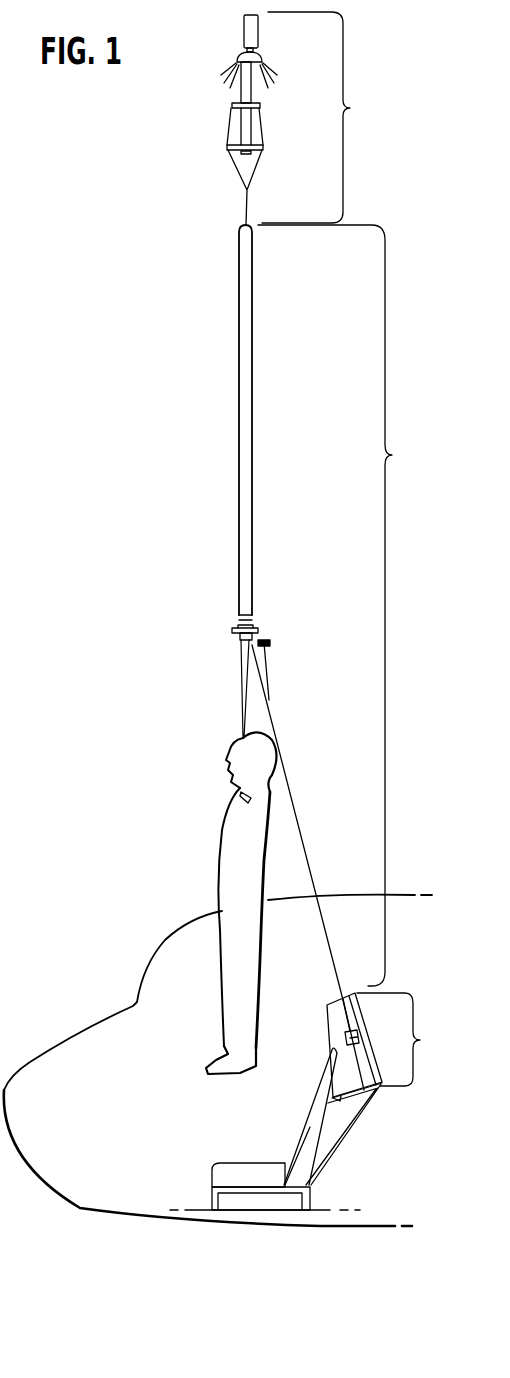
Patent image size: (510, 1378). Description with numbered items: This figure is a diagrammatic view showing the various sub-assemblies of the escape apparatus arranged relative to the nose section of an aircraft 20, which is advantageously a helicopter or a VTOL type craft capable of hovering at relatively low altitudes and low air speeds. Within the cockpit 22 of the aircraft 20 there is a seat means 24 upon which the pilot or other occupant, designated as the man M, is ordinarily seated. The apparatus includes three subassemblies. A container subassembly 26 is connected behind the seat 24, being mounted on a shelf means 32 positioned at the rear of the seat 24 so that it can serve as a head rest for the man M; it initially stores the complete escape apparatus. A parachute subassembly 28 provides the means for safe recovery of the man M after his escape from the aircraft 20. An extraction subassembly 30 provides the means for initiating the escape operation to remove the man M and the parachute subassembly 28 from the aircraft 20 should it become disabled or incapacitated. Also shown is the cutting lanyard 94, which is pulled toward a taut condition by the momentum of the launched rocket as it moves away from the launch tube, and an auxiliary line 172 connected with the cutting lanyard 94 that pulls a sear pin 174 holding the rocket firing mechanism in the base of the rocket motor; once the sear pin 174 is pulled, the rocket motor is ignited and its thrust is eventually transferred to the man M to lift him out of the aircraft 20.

The aircraft 20 is at (78, 1022).
The cockpit 22 is at (136, 1168).
The seat means 24 is at (242, 1170).
The container subassembly 26 is at (390, 1048).
The parachute subassembly 28 is at (328, 605).
The extraction subassembly 30 is at (301, 118).
The shelf means 32 is at (343, 1103).
The cutting lanyard 94 is at (300, 822).
The auxiliary line 172 is at (269, 668).
The sear pin 174 is at (270, 644).
The man M is at (235, 847).